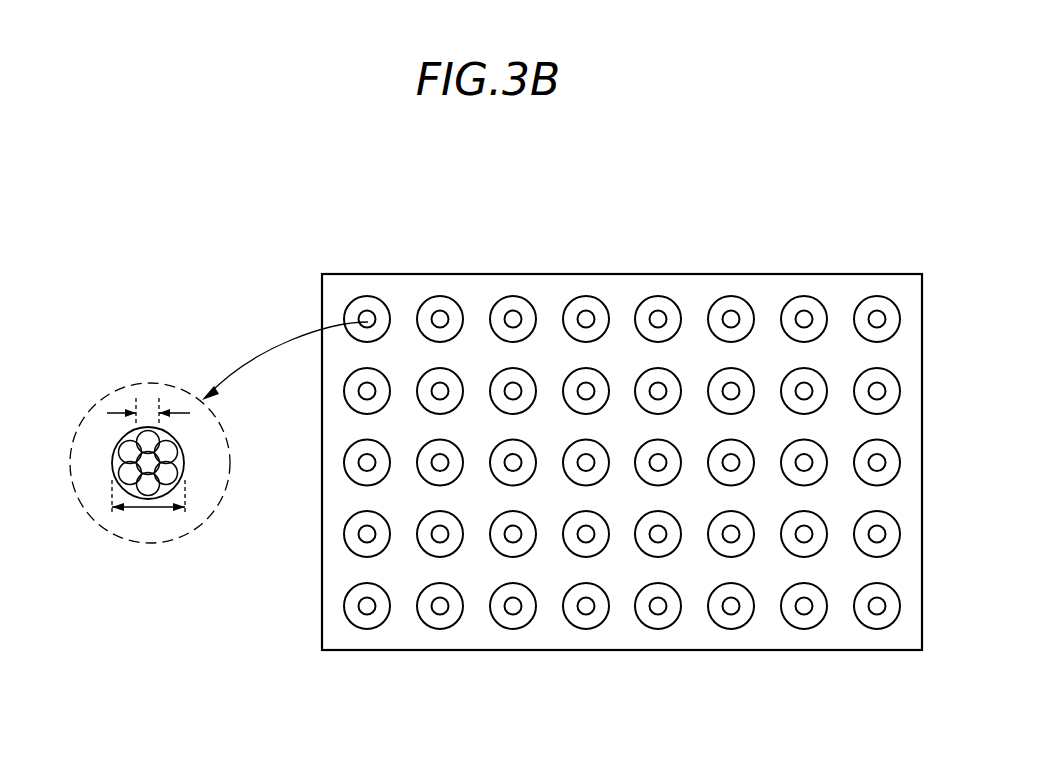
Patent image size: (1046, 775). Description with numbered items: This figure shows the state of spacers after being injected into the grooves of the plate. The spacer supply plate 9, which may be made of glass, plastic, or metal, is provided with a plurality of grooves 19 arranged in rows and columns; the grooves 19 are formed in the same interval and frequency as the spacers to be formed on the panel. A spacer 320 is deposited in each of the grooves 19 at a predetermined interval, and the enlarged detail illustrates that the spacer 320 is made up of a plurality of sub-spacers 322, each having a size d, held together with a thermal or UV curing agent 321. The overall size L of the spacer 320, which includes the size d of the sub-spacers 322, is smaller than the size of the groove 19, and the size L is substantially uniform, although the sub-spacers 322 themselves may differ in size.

The spacer supply plate 9 is at (843, 292).
The grooves 19 is at (732, 296).
The spacer 320 is at (144, 535).
The curing agent 321 is at (115, 477).
The sub-spacers 322 is at (162, 470).